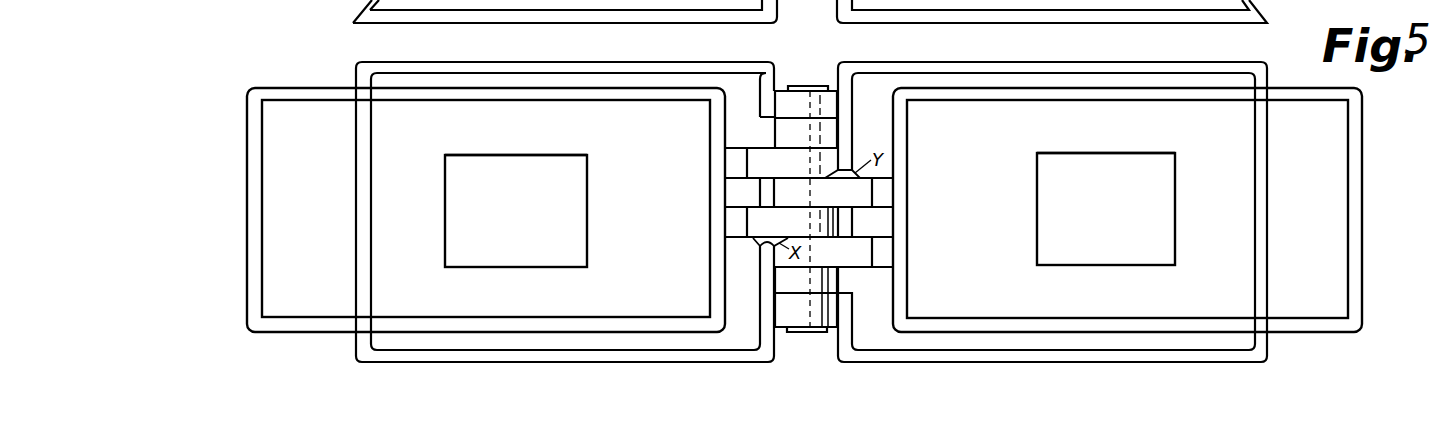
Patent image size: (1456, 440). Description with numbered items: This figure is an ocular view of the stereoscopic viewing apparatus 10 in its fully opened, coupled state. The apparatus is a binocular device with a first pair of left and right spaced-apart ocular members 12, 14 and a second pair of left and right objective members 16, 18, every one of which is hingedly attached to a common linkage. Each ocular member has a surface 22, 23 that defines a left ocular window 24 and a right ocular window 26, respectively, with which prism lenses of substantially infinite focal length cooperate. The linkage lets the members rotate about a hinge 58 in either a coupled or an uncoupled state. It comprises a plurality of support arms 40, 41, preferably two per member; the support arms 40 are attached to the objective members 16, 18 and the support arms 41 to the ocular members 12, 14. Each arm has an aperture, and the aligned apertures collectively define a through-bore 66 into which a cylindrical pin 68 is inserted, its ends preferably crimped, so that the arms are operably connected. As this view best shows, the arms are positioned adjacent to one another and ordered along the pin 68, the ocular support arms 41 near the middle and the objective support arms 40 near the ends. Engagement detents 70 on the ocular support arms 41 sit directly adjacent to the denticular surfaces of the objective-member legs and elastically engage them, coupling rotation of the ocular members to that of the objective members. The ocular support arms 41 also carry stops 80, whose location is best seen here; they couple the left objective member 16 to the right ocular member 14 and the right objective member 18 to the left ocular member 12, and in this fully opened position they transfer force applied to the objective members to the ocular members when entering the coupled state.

The viewing apparatus 10 is at (202, 317).
The left ocular member 12 is at (243, 162).
The right ocular member 14 is at (1370, 187).
The left objective member 16 is at (356, 64).
The right objective member 18 is at (1257, 62).
The surface 22 is at (543, 157).
The surface 23 is at (1125, 155).
The left ocular window 24 is at (516, 231).
The right ocular window 26 is at (1114, 231).
The support arm 40 is at (800, 321).
The support arm 41 is at (855, 262).
The hinge 58 is at (818, 82).
The through-bore 66 is at (794, 338).
The cylindrical pin 68 is at (797, 86).
The engagement detent 70 is at (846, 170).
The stop 80 is at (758, 130).